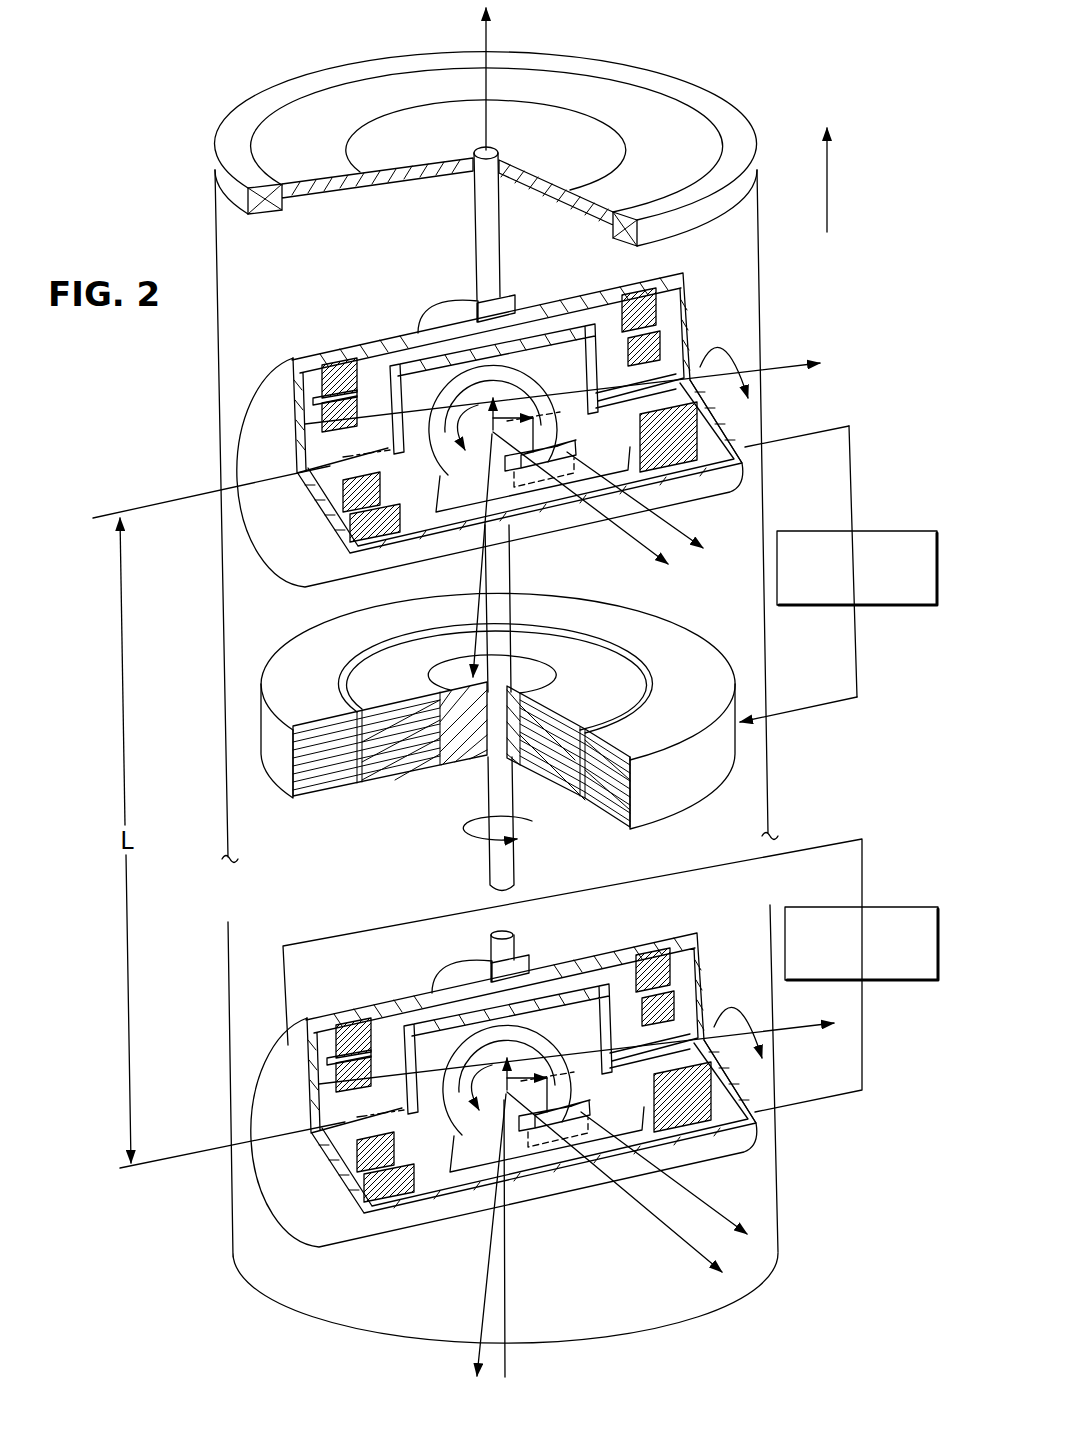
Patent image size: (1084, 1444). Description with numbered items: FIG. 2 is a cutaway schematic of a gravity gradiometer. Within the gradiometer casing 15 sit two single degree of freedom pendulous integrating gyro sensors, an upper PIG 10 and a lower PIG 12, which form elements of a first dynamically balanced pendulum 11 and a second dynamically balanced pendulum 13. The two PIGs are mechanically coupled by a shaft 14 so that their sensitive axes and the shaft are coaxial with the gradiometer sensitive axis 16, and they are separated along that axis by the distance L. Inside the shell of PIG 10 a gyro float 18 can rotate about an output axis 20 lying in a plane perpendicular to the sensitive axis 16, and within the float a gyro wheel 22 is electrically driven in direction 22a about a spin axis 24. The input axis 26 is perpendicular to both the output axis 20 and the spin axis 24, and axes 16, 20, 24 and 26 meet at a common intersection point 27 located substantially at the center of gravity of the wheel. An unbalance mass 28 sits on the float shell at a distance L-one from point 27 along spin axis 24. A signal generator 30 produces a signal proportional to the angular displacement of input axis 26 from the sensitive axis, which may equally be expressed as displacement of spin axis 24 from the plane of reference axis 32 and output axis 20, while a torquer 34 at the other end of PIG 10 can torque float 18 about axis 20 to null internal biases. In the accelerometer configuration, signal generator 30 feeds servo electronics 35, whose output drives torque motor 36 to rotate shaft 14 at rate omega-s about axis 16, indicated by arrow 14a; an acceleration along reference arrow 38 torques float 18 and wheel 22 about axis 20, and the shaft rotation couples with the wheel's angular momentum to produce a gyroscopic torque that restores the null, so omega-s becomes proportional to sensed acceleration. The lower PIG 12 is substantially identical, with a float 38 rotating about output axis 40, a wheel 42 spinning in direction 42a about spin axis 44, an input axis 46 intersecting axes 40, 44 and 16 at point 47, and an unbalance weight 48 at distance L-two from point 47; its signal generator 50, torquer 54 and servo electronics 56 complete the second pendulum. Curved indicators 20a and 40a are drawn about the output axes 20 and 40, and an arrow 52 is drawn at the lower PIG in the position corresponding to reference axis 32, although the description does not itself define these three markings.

The pendulous integrating gyro sensor 10 is at (318, 350).
The dynamically balanced pendulum 11 is at (820, 717).
The pendulous integrating gyro sensor 12 is at (327, 1000).
The dynamically balanced pendulum 13 is at (848, 832).
The shaft 14 is at (484, 790).
The rotation arrow 14a is at (463, 848).
The gradiometer casing 15 is at (215, 200).
The sensitive axis 16 is at (480, 33).
The gyro float 18 is at (440, 347).
The output axis 20 is at (788, 362).
The output axis rotation 20a is at (728, 351).
The gyro wheel 22 is at (519, 335).
The direction of rotation 22a is at (455, 410).
The spin axis 24 is at (636, 547).
The input axis 26 is at (478, 583).
The intersection point 27 is at (487, 450).
The unbalance mass 28 is at (550, 457).
The signal generator 30 is at (660, 360).
The reference axis 32 is at (678, 538).
The torquer 34 is at (318, 423).
The servo electronics 35 is at (886, 606).
The torque motor 36 is at (278, 748).
The reference arrow 38 is at (389, 972).
The output axis 40 is at (800, 1022).
The output axis rotation 40a is at (741, 1015).
The wheel 42 is at (552, 1058).
The direction of rotation 42a is at (470, 1072).
The spin axis 44 is at (672, 1231).
The input axis 46 is at (478, 1293).
The intersection point 47 is at (505, 1100).
The unbalance weight 48 is at (566, 1112).
The signal generator 50 is at (674, 1020).
The input axis arrow 52 is at (727, 1213).
The torquer 54 is at (332, 1083).
The servo electronics 56 is at (920, 981).